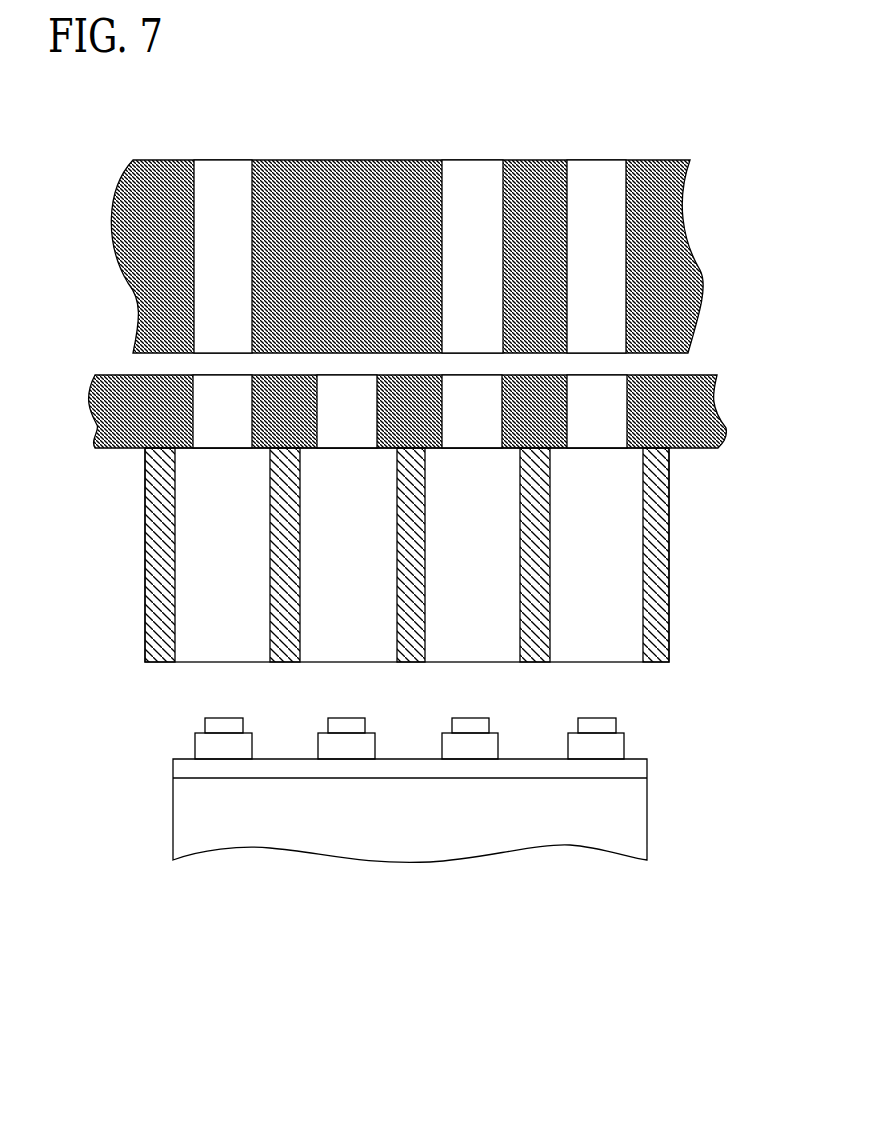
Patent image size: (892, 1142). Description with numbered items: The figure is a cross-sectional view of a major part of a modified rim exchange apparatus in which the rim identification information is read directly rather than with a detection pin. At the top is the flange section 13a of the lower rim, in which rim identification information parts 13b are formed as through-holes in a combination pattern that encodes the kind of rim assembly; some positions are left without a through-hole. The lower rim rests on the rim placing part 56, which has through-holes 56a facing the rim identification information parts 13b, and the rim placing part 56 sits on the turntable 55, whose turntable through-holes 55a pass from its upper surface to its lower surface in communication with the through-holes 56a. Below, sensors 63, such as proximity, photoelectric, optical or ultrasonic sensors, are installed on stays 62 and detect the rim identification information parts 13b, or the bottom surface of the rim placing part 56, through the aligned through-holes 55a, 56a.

The flange section 13a is at (705, 303).
The rim identification information part 13b is at (222, 183).
The turntable 55 is at (669, 577).
The turntable through-hole 55a is at (192, 525).
The rim placing part 56 is at (718, 424).
The through-hole 56a is at (613, 413).
The stay 62 is at (248, 837).
The proximity sensor 63 is at (195, 748).